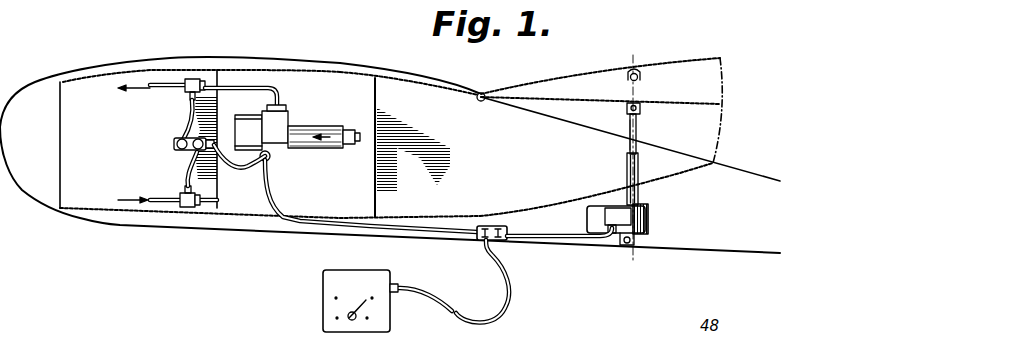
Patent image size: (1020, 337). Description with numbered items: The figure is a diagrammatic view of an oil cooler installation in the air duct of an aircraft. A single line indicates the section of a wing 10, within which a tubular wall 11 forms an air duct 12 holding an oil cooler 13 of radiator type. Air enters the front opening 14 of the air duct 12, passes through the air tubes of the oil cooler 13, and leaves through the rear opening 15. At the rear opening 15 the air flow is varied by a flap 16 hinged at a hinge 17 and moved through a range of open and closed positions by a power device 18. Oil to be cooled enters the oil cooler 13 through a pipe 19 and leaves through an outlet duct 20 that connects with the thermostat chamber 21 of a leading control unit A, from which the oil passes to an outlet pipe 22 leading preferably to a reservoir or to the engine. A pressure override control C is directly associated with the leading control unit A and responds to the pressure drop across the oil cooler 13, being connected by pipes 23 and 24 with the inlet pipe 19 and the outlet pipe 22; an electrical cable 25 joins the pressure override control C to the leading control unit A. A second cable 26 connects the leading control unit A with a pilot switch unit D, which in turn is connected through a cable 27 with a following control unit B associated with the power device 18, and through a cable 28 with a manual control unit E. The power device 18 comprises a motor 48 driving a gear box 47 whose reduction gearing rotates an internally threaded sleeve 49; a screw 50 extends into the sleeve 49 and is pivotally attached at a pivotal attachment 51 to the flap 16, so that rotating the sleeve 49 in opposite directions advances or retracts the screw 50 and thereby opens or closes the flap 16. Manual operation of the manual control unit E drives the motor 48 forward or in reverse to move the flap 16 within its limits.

The wing 10 is at (150, 58).
The tubular wall 11 is at (367, 75).
The air duct 12 is at (111, 145).
The oil cooler 13 is at (380, 107).
The front opening 14 is at (57, 193).
The rear opening 15 is at (553, 117).
The flap 16 is at (578, 97).
The hinge 17 is at (482, 92).
The power device 18 is at (645, 162).
The pipe 19 is at (163, 203).
The outlet duct 20 is at (363, 132).
The thermostat chamber 21 is at (310, 130).
The outlet pipe 22 is at (242, 87).
The pipe 23 is at (186, 165).
The pipe 24 is at (187, 105).
The electrical cable 25 is at (227, 170).
The second cable 26 is at (408, 228).
The cable 27 is at (527, 230).
The cable 28 is at (513, 288).
The gear box 47 is at (648, 220).
The motor 48 is at (615, 209).
The internally threaded sleeve 49 is at (627, 167).
The screw 50 is at (638, 126).
The pivotal attachment 51 is at (641, 105).
The leading control unit A is at (275, 115).
The following control unit B is at (645, 212).
The pressure override control C is at (176, 141).
The pilot switch unit D is at (487, 225).
The manual control unit E is at (323, 288).